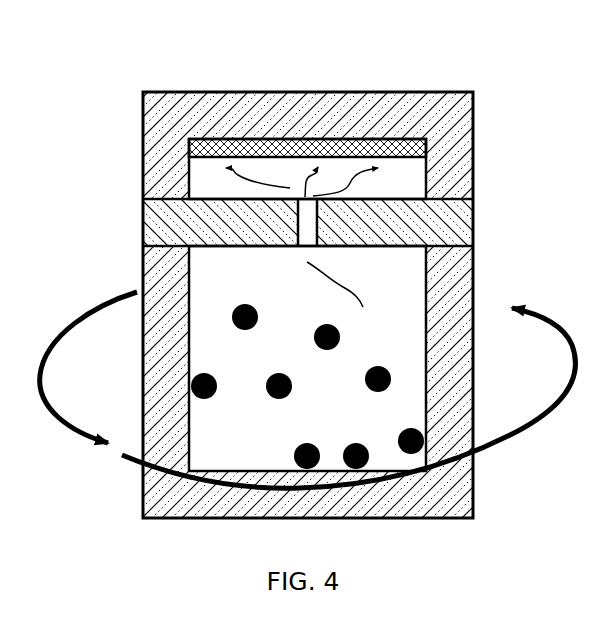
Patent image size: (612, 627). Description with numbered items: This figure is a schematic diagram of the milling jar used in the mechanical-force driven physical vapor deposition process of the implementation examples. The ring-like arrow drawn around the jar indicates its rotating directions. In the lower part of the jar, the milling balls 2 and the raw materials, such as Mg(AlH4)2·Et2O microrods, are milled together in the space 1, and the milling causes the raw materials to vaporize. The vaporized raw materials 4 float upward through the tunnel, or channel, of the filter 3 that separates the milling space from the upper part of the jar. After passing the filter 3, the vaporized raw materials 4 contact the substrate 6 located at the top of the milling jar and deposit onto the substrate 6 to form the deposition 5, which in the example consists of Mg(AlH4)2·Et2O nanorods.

The space 1 is at (383, 423).
The milling balls 2 is at (231, 310).
The filter 3 is at (400, 222).
The vaporized raw materials 4 is at (306, 261).
The deposition 5 is at (420, 145).
The substrate 6 is at (268, 122).